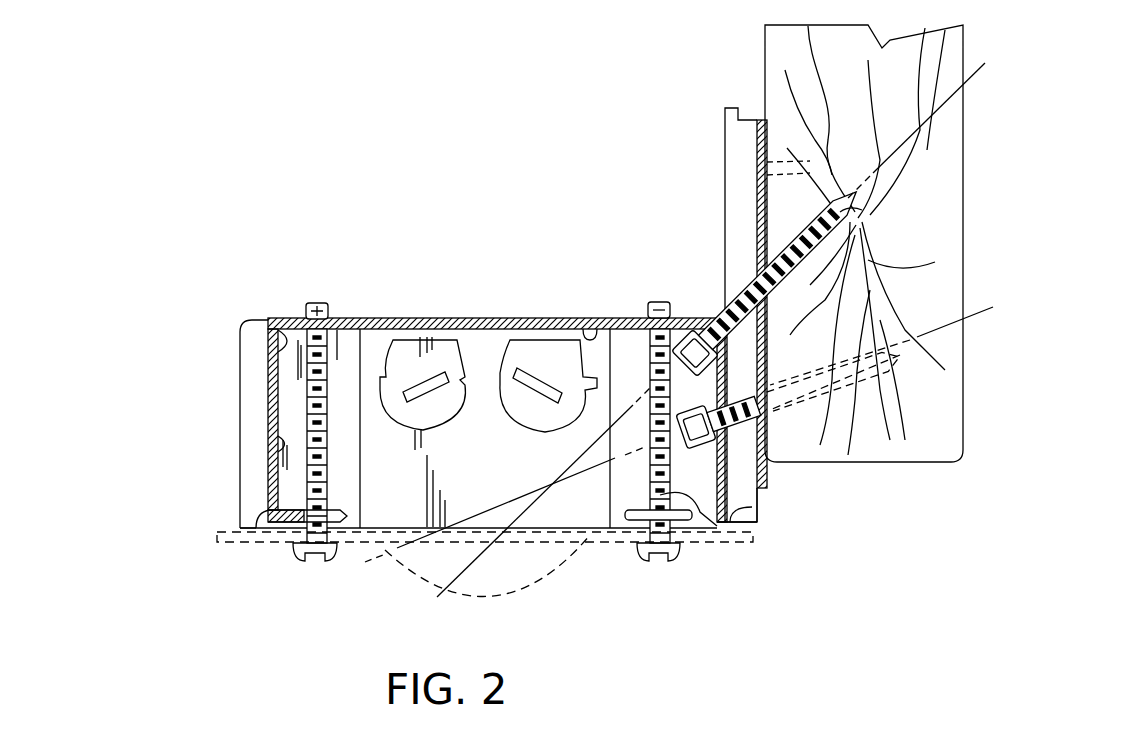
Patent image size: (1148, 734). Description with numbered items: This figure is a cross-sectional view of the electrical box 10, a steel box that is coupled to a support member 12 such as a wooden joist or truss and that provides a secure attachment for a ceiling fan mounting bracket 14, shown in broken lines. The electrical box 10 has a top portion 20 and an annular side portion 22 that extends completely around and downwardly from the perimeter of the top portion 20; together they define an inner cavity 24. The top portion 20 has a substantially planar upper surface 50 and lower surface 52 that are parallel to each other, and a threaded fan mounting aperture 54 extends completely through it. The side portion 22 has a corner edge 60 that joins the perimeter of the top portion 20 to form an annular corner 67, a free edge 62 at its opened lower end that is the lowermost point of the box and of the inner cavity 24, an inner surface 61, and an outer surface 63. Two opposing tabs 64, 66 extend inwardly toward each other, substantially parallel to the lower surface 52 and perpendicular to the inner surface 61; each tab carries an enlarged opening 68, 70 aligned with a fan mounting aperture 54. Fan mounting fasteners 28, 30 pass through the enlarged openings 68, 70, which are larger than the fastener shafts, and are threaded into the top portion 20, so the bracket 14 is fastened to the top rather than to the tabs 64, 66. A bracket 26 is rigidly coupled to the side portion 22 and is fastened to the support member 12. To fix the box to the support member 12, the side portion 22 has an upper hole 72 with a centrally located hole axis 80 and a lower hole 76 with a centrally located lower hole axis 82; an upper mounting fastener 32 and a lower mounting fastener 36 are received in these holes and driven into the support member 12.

The electrical box 10 is at (236, 228).
The support member 12 is at (762, 72).
The ceiling fan mounting bracket 14 is at (497, 598).
The top portion 20 is at (485, 310).
The side portion 22 is at (238, 415).
The inner cavity 24 is at (578, 508).
The bracket 26 is at (722, 145).
The fan mounting fastener 28 is at (330, 320).
The fan mounting fastener 30 is at (650, 320).
The upper mounting fastener 32 is at (870, 245).
The lower mounting fastener 36 is at (852, 380).
The upper surface 50 is at (397, 320).
The lower surface 52 is at (580, 320).
The fan mounting aperture 54 is at (305, 316).
The corner edge 60 is at (292, 345).
The inner surface 61 is at (282, 444).
The free edge 62 is at (248, 530).
The outer surface 63 is at (757, 522).
The tab 64 is at (345, 540).
The tab 66 is at (658, 496).
The annular corner 67 is at (262, 322).
The enlarged opening 68 is at (328, 509).
The enlarged opening 70 is at (688, 520).
The upper hole 72 is at (716, 320).
The lower hole 76 is at (755, 490).
The hole axis 80 is at (985, 63).
The lower hole axis 82 is at (993, 307).